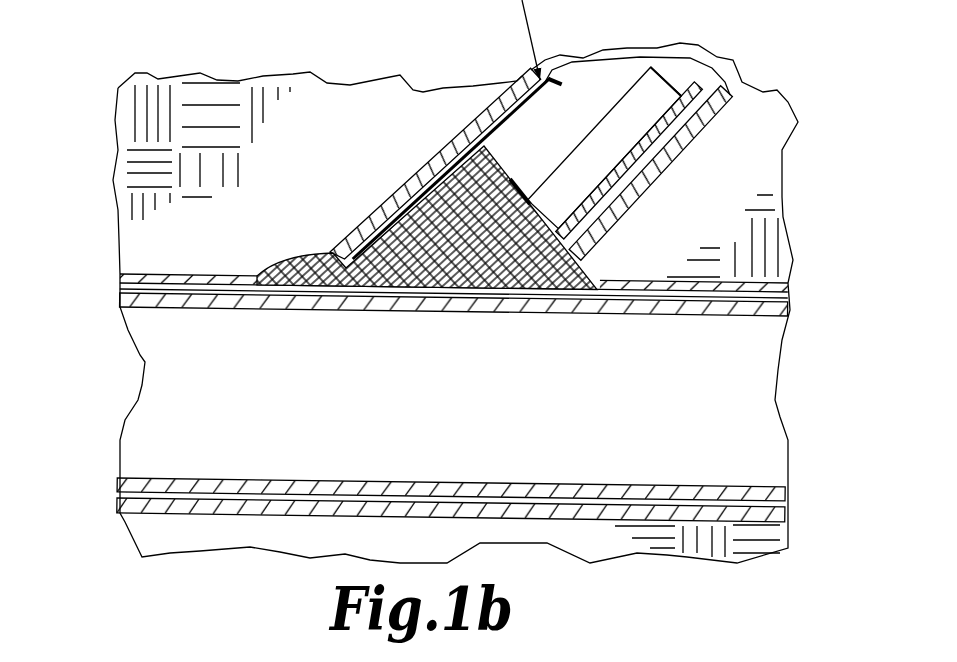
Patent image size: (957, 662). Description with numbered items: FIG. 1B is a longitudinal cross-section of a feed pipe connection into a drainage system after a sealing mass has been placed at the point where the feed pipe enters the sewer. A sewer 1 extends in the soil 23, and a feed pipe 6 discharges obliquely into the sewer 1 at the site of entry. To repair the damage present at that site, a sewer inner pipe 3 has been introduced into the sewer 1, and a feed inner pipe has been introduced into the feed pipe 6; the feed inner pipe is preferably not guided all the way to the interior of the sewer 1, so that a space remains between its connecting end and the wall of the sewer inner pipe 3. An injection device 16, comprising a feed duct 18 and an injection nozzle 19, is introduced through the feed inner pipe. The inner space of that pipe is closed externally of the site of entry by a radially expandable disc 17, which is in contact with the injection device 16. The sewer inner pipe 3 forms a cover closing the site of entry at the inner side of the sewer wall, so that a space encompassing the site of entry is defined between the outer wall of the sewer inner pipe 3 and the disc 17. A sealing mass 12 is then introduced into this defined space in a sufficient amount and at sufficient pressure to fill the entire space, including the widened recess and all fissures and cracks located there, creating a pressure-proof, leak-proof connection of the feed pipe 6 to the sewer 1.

The sewer 1 is at (115, 279).
The sewer inner pipe 3 is at (115, 300).
The feed pipe 6 is at (400, 184).
The sealing mass 12 is at (427, 218).
The injection device 16 is at (567, 173).
The radially expandable disc 17 is at (522, 158).
The feed duct 18 is at (652, 74).
The injection nozzle 19 is at (543, 185).
The soil 23 is at (455, 303).